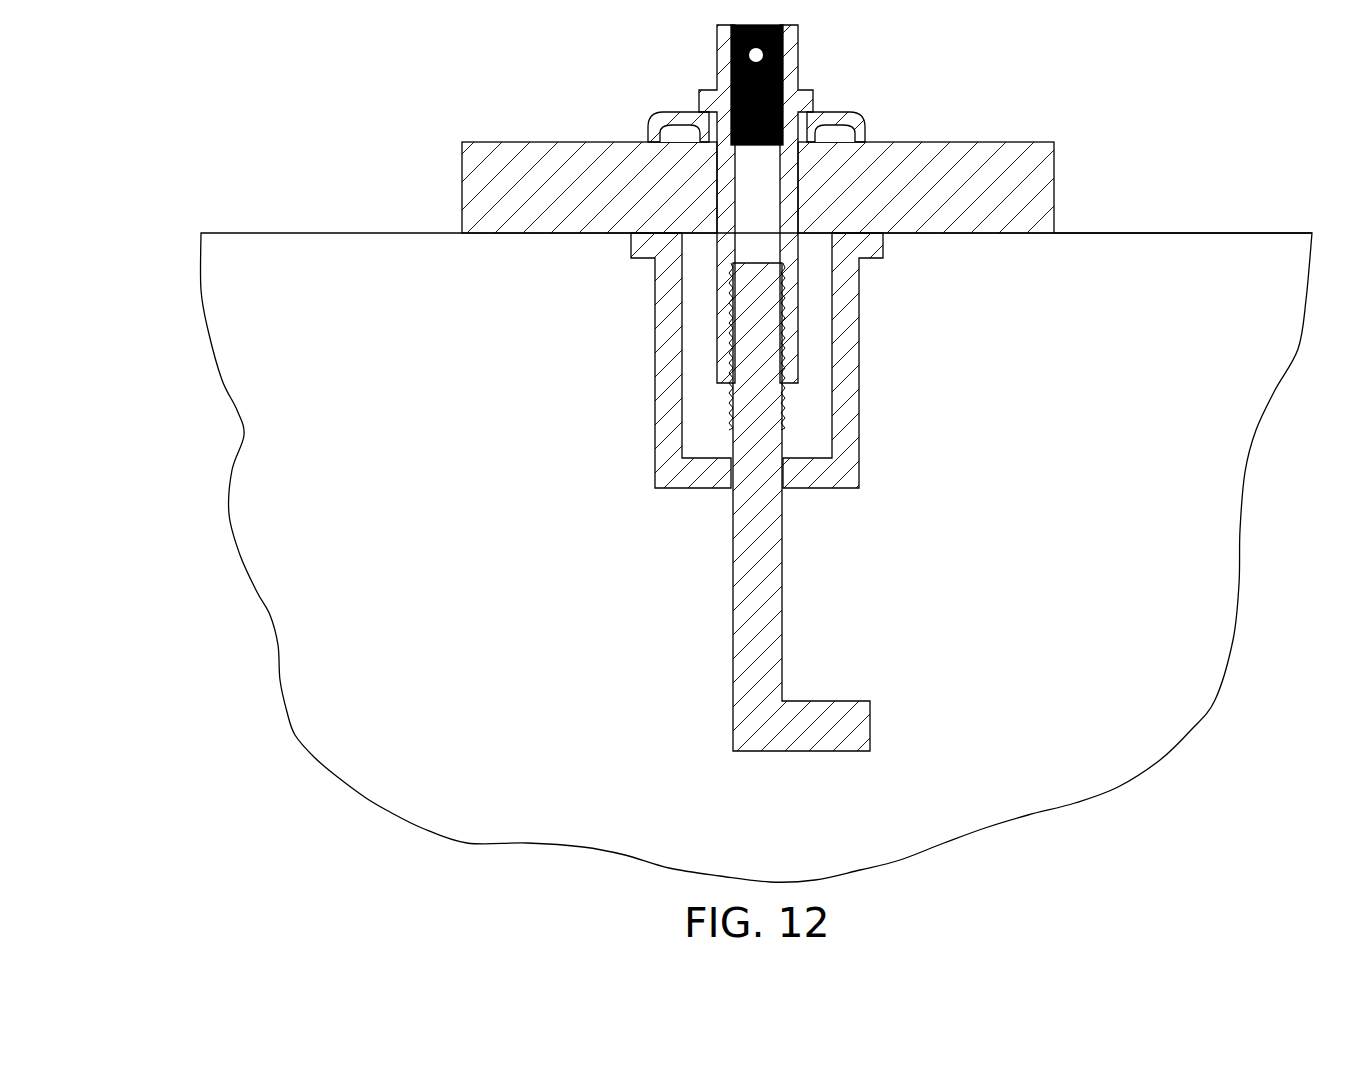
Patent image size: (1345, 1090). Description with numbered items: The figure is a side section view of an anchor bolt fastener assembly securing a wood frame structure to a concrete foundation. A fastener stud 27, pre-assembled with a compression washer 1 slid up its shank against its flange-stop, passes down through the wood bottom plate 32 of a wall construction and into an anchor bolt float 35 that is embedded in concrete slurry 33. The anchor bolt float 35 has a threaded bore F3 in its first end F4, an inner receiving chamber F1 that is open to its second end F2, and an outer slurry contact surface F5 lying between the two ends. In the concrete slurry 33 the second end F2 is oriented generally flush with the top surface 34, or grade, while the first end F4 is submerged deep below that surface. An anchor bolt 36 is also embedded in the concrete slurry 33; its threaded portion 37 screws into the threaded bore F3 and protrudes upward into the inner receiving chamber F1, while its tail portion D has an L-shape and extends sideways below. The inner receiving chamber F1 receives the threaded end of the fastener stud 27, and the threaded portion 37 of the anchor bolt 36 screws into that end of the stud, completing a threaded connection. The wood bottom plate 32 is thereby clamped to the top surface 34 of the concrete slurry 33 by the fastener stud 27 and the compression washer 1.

The compression washer 1 is at (652, 138).
The fastener stud 27 is at (790, 57).
The wood bottom plate 32 is at (458, 188).
The concrete slurry 33 is at (262, 397).
The top surface 34 is at (1228, 233).
The anchor bolt float 35 is at (668, 392).
The anchor bolt 36 is at (742, 621).
The threaded portion 37 is at (770, 395).
The inner receiving chamber F1 is at (819, 430).
The second end F2 is at (618, 263).
The threaded bore F3 is at (805, 478).
The first end F4 is at (622, 500).
The outer slurry contact surface F5 is at (884, 412).
The tail portion D is at (923, 775).